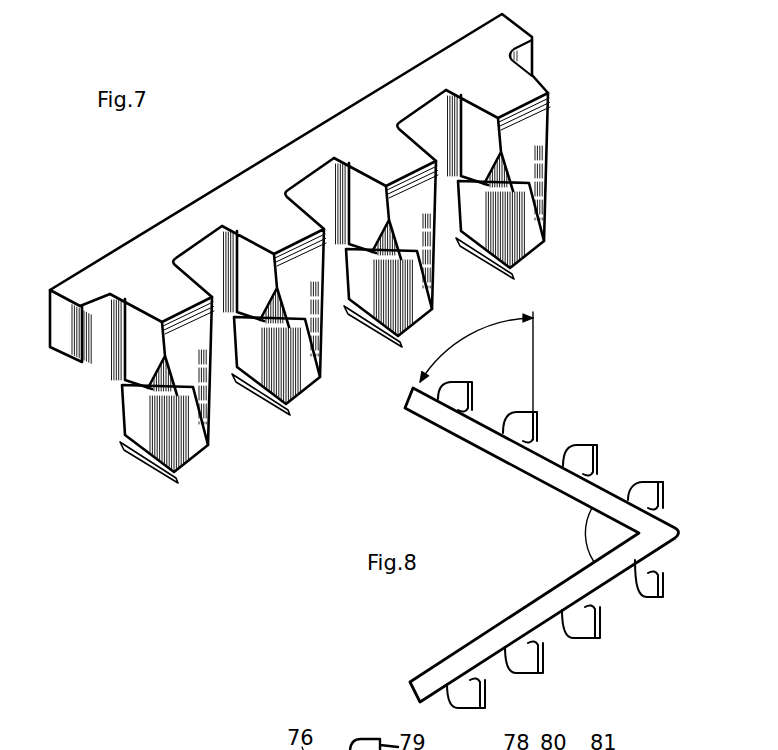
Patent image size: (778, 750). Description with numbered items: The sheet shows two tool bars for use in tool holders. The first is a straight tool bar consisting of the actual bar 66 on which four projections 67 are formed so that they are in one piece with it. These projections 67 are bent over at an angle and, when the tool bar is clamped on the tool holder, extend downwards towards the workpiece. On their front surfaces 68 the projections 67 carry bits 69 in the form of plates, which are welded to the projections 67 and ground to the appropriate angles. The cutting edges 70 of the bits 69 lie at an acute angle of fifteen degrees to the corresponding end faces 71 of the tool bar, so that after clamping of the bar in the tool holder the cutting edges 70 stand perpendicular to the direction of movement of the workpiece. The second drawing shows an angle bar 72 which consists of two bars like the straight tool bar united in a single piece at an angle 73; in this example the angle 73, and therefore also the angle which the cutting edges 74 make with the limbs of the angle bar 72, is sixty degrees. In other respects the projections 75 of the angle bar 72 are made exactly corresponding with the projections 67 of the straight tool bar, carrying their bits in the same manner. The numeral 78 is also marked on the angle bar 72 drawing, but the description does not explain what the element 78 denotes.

In FIG. 7, the strip 66 is at (188, 232).
In FIG. 7, the notch 67 is at (163, 293).
In FIG. 7, the hook 68 is at (145, 338).
In FIG. 7, the lip 69 is at (137, 448).
In FIG. 7, the foot 70 is at (158, 467).
In FIG. 7, the end tab 71 is at (67, 313).
In FIG. 8, the bar 72 is at (472, 432).
In FIG. 8, the angle 73 is at (472, 336).
In FIG. 8, the clip end 74 is at (663, 487).
In FIG. 8, the lower clips 75 is at (647, 580).
In FIG. 8, the upper clips 78 is at (648, 492).